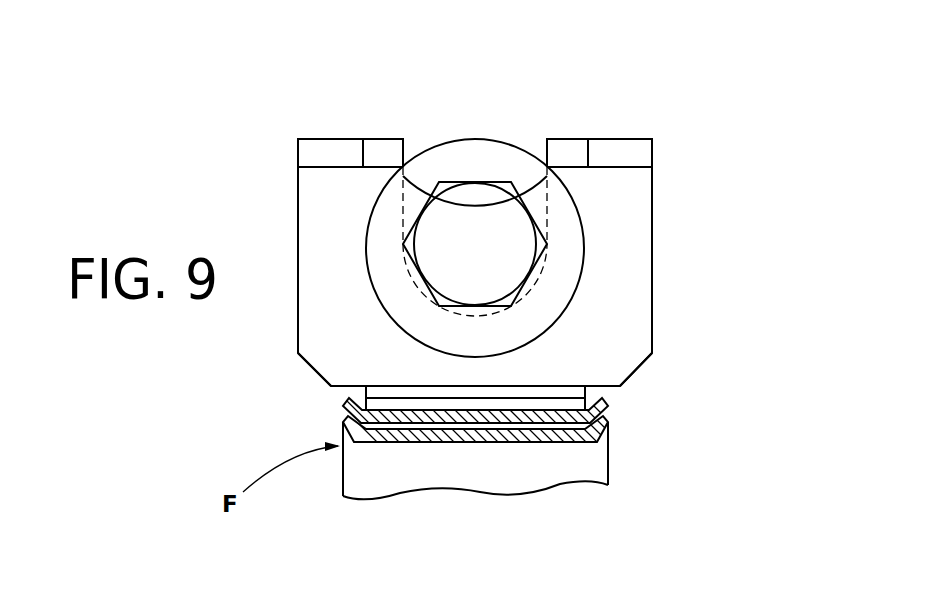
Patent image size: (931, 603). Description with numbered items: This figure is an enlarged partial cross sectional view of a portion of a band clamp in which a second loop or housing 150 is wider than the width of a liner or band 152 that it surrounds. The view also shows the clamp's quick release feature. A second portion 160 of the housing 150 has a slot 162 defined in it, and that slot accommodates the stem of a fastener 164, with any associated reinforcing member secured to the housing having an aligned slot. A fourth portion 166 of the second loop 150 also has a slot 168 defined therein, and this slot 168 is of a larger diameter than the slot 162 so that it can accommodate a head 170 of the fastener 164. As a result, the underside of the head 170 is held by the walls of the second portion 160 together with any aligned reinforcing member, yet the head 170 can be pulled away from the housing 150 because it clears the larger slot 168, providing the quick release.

The second loop or housing 150 is at (660, 215).
The liner or band 152 is at (613, 462).
The second portion 160 is at (572, 137).
The slot 162 is at (403, 147).
The fastener 164 is at (488, 138).
The fourth portion 166 is at (633, 307).
The slot 168 is at (362, 200).
The head 170 is at (393, 278).